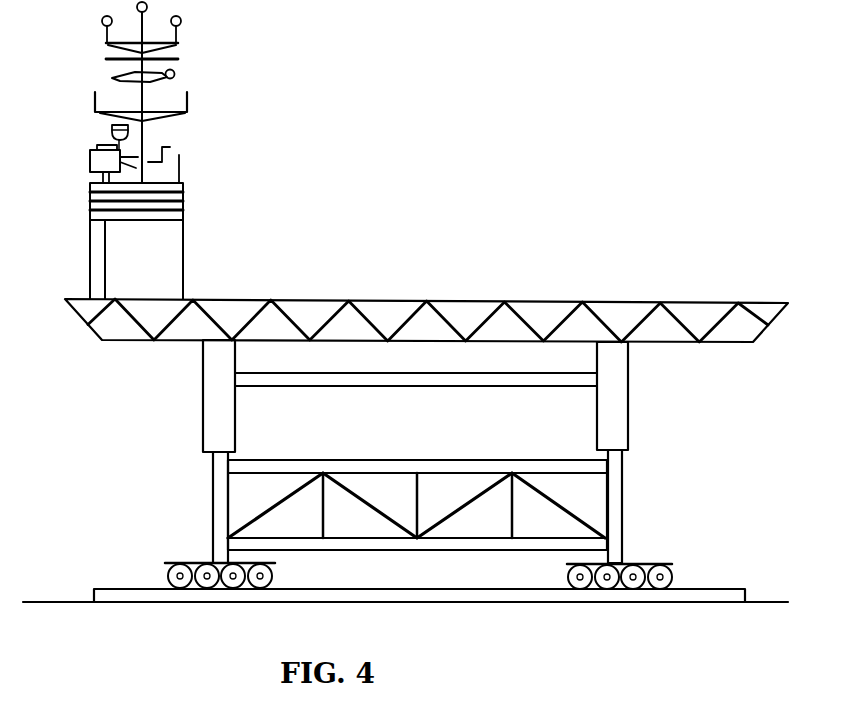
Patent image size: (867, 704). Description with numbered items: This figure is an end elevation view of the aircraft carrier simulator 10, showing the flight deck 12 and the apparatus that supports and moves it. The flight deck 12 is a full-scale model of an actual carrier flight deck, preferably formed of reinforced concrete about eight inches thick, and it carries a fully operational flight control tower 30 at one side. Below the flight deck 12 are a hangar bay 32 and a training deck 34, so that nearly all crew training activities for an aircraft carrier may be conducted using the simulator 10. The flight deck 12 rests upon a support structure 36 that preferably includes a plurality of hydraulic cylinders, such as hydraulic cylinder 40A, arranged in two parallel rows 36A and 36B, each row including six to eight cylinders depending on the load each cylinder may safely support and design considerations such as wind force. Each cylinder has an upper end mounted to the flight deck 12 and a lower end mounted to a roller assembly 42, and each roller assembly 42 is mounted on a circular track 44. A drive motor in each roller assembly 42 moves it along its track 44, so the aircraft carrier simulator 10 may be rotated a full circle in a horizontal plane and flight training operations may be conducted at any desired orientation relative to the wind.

The aircraft carrier simulator 10 is at (623, 236).
The flight deck 12 is at (508, 276).
The flight control tower 30 is at (205, 195).
The hangar bay 32 is at (468, 375).
The training deck 34 is at (555, 460).
The support structure 36 is at (218, 632).
The first row of hydraulic cylinders 36A is at (126, 440).
The second row of hydraulic cylinders 36B is at (659, 387).
The hydraulic cylinder 40A is at (203, 362).
The roller assembly 42 is at (128, 561).
The circular track 44 is at (343, 590).